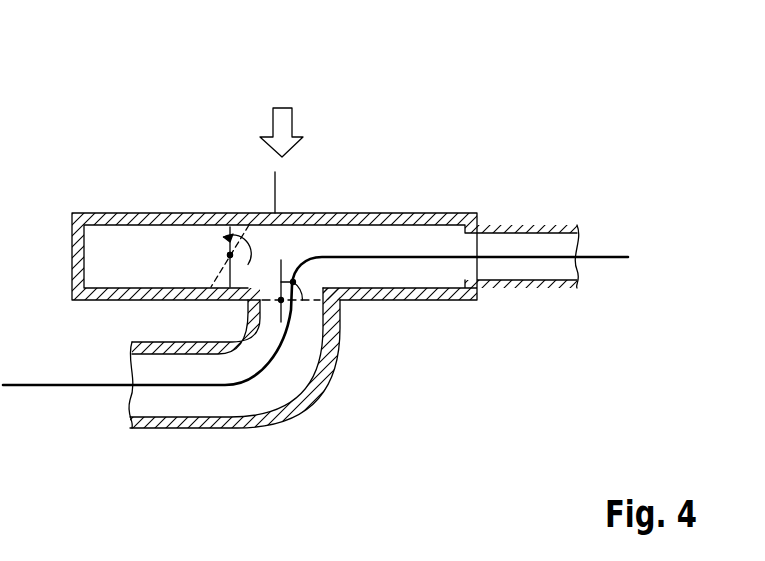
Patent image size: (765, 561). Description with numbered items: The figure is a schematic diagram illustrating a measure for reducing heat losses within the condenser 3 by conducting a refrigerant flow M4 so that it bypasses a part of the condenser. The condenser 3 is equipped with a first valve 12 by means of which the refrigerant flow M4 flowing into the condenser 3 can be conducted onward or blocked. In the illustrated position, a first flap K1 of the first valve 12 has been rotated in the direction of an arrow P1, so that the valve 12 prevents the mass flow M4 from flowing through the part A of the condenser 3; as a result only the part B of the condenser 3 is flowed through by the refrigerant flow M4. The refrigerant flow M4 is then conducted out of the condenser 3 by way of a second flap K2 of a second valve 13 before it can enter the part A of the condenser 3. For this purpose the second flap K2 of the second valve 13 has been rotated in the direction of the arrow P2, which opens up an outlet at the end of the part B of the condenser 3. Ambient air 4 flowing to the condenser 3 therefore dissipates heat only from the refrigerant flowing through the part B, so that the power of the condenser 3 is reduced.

The condenser 3 is at (433, 212).
The ambient air 4 is at (282, 117).
The first valve 12 is at (211, 250).
The second valve 13 is at (301, 319).
The first flap K1 is at (213, 280).
The second flap K2 is at (279, 320).
The arrow P1 is at (252, 250).
The arrow P2 is at (330, 300).
The refrigerant flow M4 is at (70, 443).
The part A of the condenser A is at (151, 188).
The part B of the condenser B is at (374, 188).